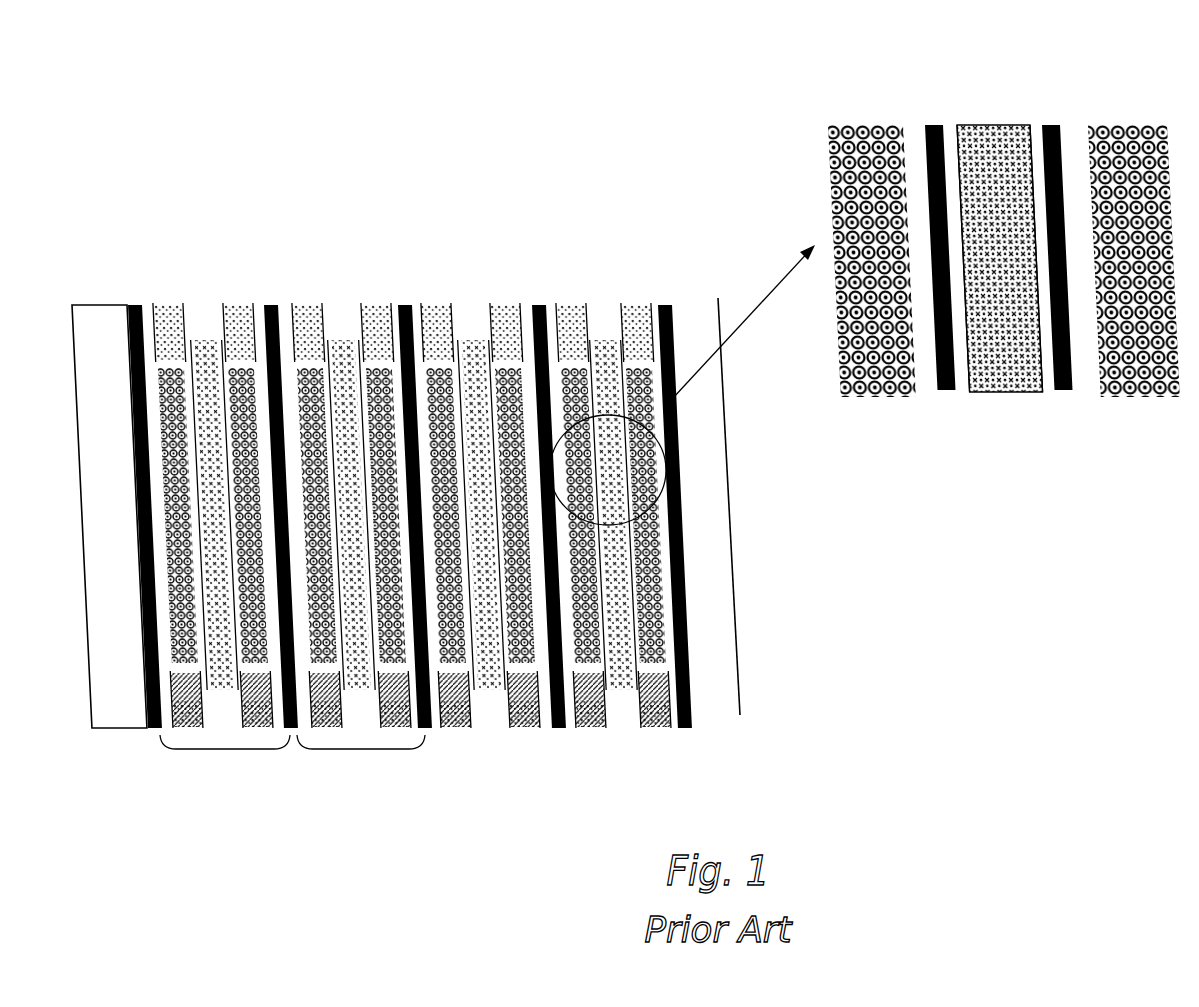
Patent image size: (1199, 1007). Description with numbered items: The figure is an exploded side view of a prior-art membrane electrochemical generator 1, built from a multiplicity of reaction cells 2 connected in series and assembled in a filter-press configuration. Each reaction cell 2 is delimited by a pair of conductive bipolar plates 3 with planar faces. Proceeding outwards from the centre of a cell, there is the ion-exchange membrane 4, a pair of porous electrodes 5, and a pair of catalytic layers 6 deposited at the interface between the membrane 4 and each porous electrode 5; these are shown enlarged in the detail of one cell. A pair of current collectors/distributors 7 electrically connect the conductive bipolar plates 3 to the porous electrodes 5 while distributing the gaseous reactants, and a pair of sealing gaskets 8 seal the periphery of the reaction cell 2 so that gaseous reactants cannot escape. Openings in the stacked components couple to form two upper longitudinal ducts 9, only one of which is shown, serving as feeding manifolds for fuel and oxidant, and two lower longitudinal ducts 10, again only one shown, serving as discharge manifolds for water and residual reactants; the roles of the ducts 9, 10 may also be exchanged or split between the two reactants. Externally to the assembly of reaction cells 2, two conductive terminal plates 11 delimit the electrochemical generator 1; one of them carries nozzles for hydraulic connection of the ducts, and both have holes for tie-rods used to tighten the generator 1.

The electrochemical generator 1 is at (584, 198).
The reaction cell 2 is at (1040, 52).
The conductive bipolar plate 3 is at (131, 308).
The ion-exchange membrane 4 is at (203, 335).
The porous electrode 5 is at (950, 390).
The catalytic layer 6 is at (967, 372).
The current collector/distributor 7 is at (578, 645).
The sealing gasket 8 is at (165, 302).
The upper longitudinal duct 9 is at (210, 340).
The lower longitudinal duct 10 is at (438, 712).
The conductive terminal plate 11 is at (95, 390).